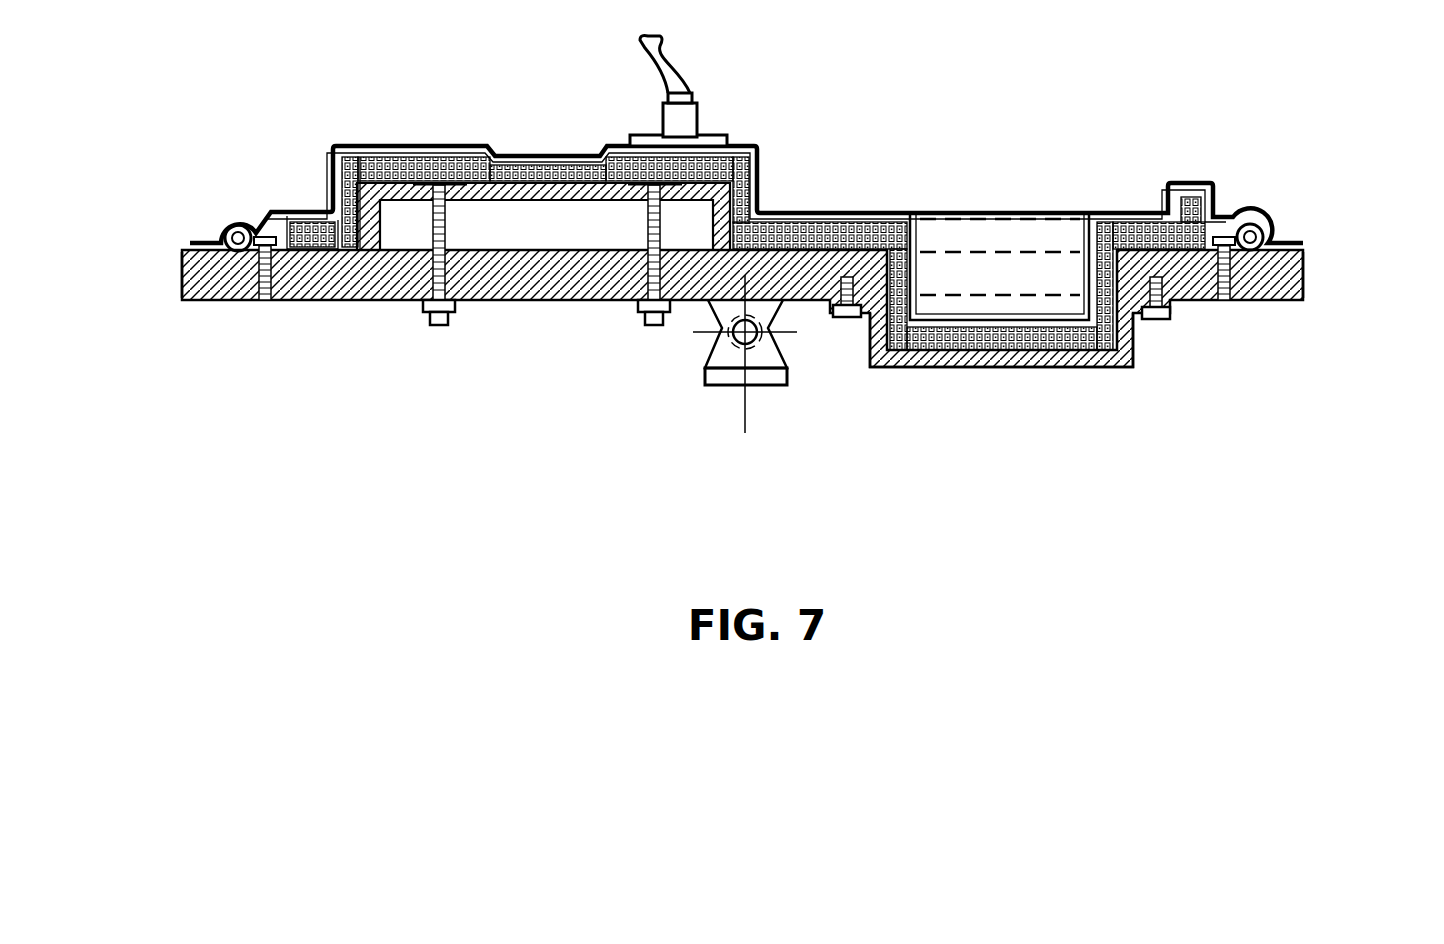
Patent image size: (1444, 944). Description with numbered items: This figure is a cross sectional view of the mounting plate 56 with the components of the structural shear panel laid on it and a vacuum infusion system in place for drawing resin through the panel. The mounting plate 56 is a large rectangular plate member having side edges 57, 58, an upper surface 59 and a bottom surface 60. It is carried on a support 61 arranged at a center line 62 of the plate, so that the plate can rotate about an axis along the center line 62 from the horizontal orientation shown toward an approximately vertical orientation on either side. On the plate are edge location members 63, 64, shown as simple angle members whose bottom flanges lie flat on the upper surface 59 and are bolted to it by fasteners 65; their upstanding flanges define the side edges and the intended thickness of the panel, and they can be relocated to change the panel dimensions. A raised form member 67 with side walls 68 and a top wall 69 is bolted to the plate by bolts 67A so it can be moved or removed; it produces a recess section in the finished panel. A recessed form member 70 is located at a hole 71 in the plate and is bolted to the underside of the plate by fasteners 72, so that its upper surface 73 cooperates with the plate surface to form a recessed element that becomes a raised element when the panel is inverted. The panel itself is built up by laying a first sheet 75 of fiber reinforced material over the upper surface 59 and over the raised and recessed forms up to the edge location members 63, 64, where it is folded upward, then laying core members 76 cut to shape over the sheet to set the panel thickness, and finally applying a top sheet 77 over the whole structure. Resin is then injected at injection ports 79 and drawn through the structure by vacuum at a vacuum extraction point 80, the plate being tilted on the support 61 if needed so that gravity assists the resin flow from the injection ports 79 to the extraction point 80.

The mounting plate 56 is at (1326, 246).
The side edge 57 is at (181, 272).
The side edge 58 is at (1303, 274).
The upper surface 59 is at (1300, 233).
The bottom surface 60 is at (1262, 302).
The support 61 is at (702, 391).
The center line 62 is at (747, 418).
The edge location member 63 is at (253, 217).
The edge location member 64 is at (1212, 212).
The fastener 65 is at (265, 302).
The raised form member 67 is at (478, 184).
The bolt 67A is at (437, 326).
The side wall 68 is at (766, 213).
The top wall 69 is at (511, 182).
The recessed form member 70 is at (1058, 374).
The hole 71 is at (1083, 255).
The fastener 72 is at (846, 322).
The upper surface 73 is at (967, 368).
The first sheet 75 is at (308, 255).
The core member 76 is at (392, 157).
The top sheet 77 is at (414, 160).
The injection port 79 is at (700, 122).
The vacuum extraction point 80 is at (222, 233).